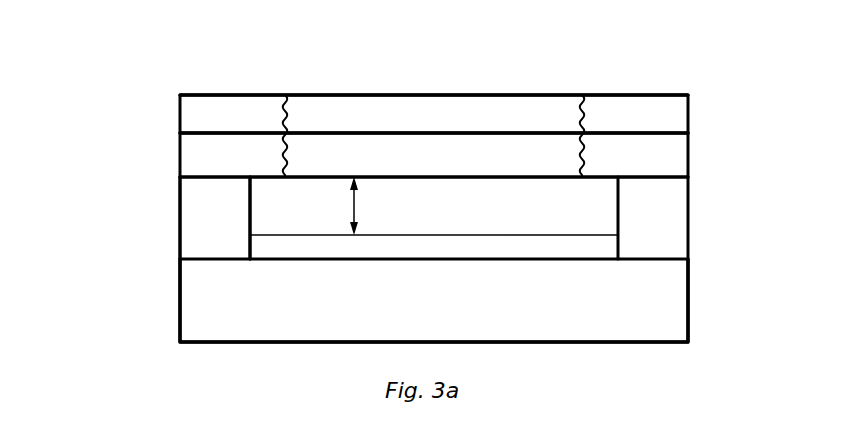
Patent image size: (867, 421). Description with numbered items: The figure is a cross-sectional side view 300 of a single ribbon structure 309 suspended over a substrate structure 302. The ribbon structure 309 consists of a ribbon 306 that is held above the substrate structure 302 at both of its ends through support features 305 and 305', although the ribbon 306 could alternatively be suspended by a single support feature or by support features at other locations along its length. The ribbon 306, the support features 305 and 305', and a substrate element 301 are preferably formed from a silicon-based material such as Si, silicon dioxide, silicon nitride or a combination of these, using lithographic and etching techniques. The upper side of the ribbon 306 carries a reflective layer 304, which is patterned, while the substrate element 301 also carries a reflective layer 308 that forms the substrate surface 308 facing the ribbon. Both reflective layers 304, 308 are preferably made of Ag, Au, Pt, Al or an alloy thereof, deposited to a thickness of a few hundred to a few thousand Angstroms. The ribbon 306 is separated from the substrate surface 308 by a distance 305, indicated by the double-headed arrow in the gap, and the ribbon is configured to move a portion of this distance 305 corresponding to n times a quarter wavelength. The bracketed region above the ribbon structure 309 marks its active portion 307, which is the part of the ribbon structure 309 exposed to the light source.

The cross-sectional side view 300 is at (168, 52).
The substrate element 301 is at (688, 306).
The substrate structure 302 is at (180, 243).
The reflective layer 304 is at (688, 116).
The support feature / distance 305 is at (502, 218).
The support feature 305' is at (178, 218).
The ribbon 306 is at (688, 159).
The active portion 307 is at (583, 97).
The substrate surface / reflective layer 308 is at (577, 247).
The ribbon structure 309 is at (180, 95).